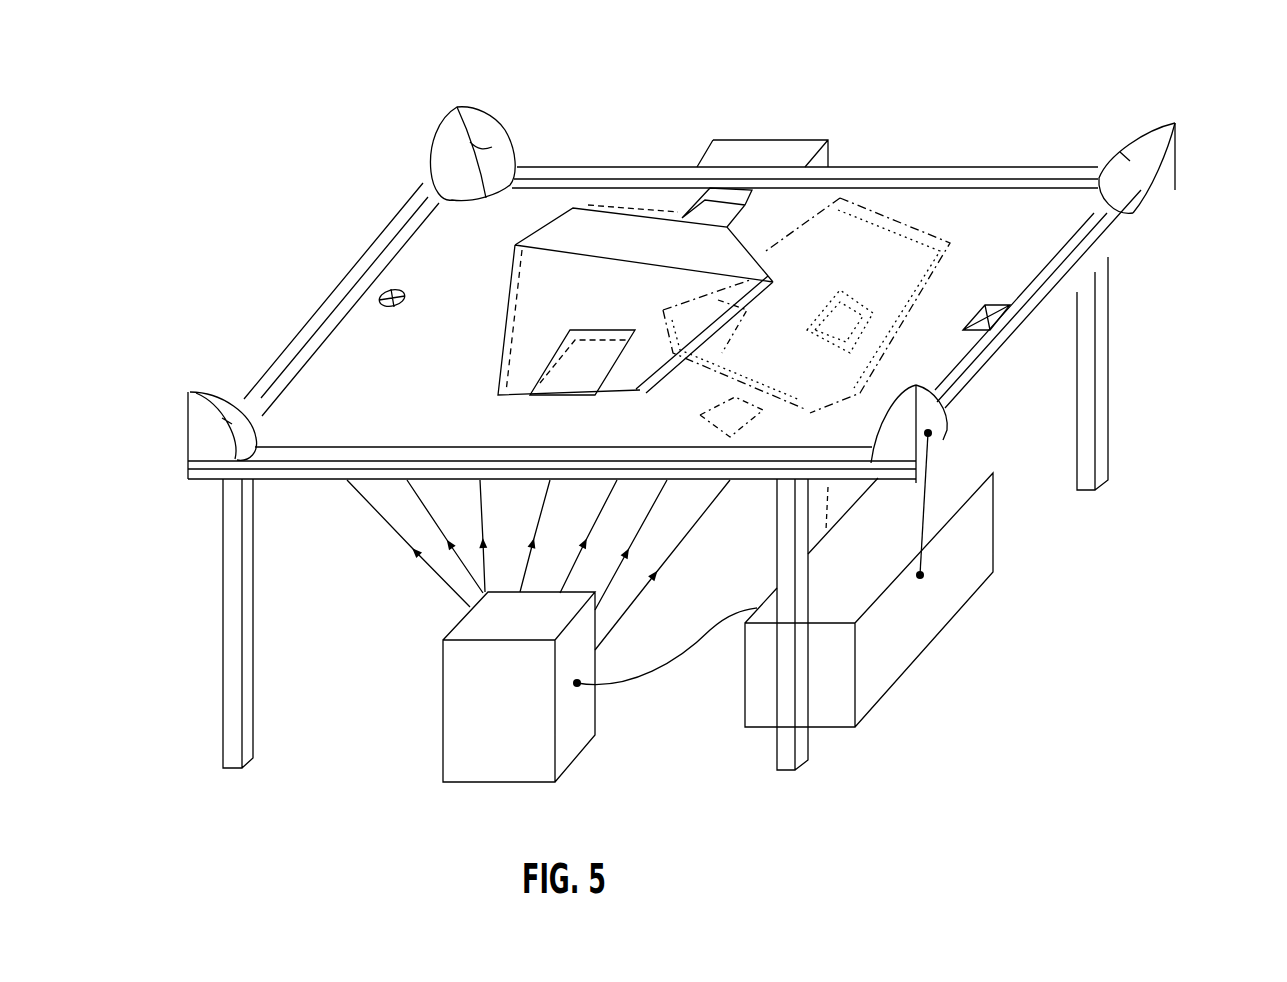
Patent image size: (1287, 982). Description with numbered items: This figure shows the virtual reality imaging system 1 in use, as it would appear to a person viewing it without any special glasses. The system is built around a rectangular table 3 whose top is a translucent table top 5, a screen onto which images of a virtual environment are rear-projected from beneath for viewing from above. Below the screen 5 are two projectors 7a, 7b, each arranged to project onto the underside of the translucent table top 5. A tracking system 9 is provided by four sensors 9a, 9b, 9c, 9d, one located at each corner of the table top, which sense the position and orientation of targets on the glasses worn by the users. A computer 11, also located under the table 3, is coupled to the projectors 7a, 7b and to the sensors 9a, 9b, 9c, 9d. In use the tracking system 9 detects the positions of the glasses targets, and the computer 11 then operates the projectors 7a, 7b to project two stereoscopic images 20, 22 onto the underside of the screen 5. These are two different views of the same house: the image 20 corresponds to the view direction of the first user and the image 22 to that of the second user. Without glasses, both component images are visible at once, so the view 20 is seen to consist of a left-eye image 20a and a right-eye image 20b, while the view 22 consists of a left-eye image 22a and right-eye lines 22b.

The virtual reality imaging system 1 is at (1137, 66).
The rectangular table 3 is at (339, 281).
The translucent table top 5 is at (617, 193).
The projector 7a is at (520, 717).
The projector 7b is at (718, 158).
The tracking system 9 is at (1195, 148).
The sensor 9a is at (487, 124).
The sensor 9b is at (1147, 143).
The sensor 9c is at (946, 440).
The sensor 9d is at (203, 421).
The computer 11 is at (905, 644).
The stereoscopic image 20 is at (963, 268).
The left eye image 20a is at (892, 213).
The right eye image 20b is at (913, 287).
The stereoscopic image 22 is at (459, 366).
The left eye image 22a is at (508, 290).
The right eye lines 22b is at (517, 325).